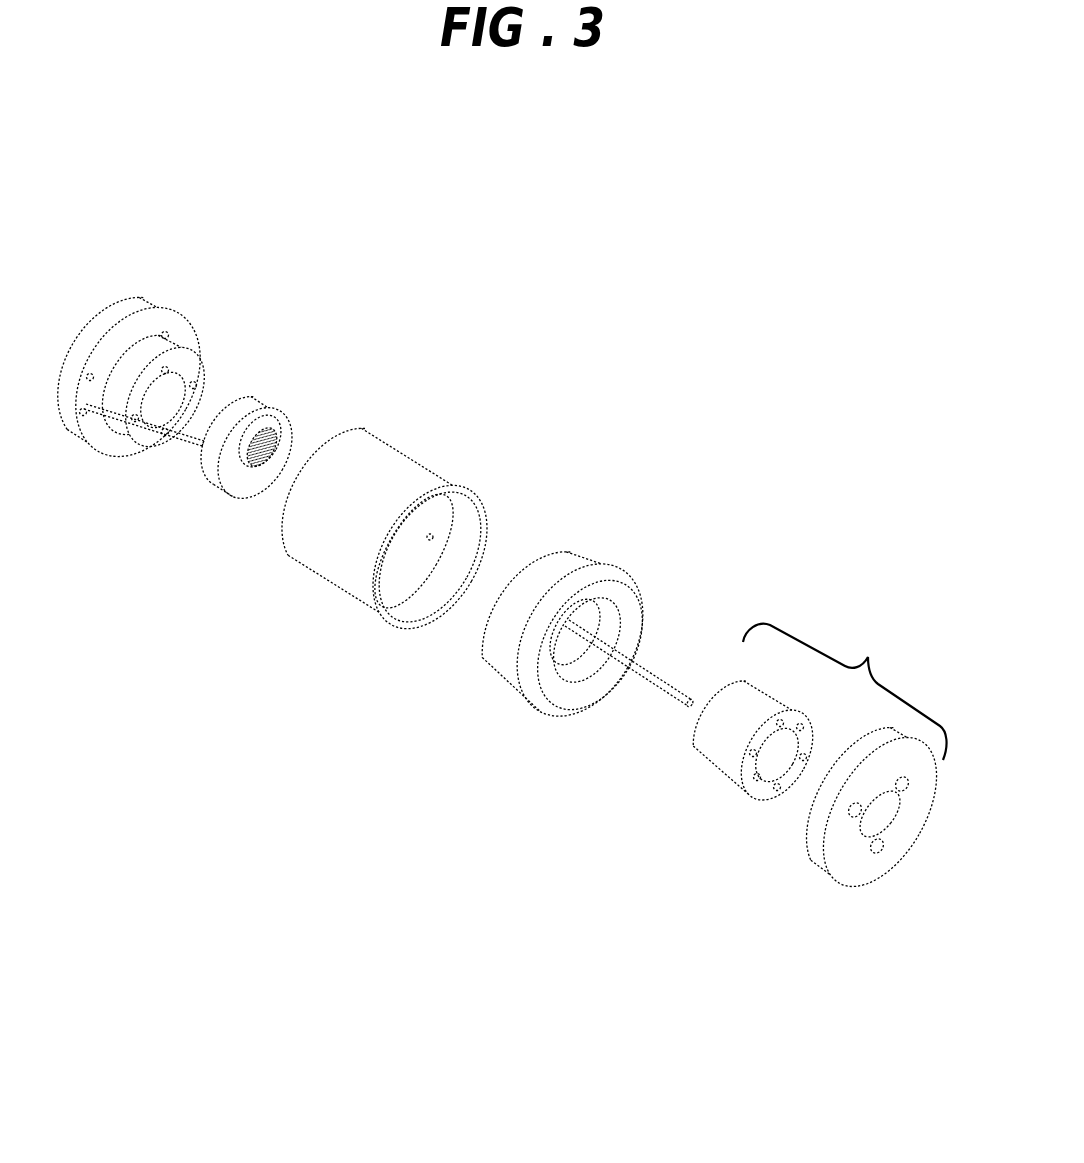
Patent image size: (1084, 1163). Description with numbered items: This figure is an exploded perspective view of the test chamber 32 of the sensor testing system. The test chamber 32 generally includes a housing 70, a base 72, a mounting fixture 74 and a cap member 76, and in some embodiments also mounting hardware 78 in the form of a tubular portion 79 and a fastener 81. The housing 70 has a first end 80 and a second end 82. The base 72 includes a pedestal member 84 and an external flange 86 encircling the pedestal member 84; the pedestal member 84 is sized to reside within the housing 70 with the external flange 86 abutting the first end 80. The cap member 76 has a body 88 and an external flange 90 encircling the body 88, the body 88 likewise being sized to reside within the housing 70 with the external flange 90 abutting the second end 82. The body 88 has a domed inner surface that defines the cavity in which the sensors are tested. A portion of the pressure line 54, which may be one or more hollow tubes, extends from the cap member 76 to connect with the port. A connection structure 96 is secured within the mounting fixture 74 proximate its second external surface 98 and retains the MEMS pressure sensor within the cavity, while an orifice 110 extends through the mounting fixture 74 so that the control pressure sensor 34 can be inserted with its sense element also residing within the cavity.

The test chamber 32 is at (500, 959).
The control pressure sensor 34 is at (191, 436).
The pressure line 54 is at (646, 673).
The housing 70 is at (372, 505).
The base 72 is at (139, 386).
The mounting fixture 74 is at (289, 457).
The cap member 76 is at (564, 644).
The mounting hardware 78 is at (868, 657).
The tubular portion 79 is at (703, 753).
The first end 80 is at (302, 513).
The fastener 81 is at (838, 855).
The second end 82 is at (360, 597).
The pedestal member 84 is at (112, 410).
The external flange 86 is at (84, 434).
The body 88 is at (493, 647).
The external flange 90 is at (557, 698).
The connection structure 96 is at (263, 447).
The second external surface 98 is at (227, 487).
The orifice 110 is at (237, 462).